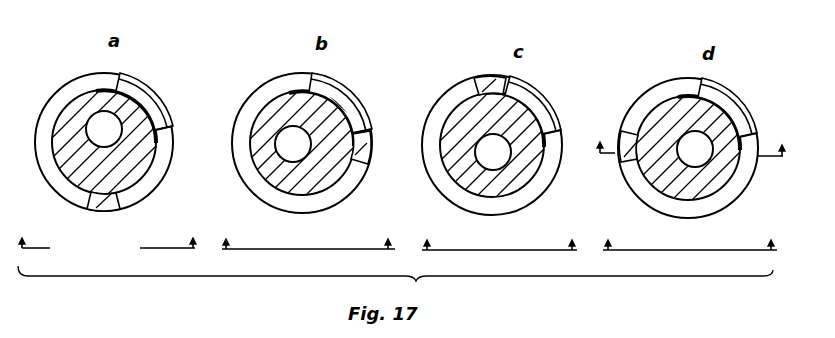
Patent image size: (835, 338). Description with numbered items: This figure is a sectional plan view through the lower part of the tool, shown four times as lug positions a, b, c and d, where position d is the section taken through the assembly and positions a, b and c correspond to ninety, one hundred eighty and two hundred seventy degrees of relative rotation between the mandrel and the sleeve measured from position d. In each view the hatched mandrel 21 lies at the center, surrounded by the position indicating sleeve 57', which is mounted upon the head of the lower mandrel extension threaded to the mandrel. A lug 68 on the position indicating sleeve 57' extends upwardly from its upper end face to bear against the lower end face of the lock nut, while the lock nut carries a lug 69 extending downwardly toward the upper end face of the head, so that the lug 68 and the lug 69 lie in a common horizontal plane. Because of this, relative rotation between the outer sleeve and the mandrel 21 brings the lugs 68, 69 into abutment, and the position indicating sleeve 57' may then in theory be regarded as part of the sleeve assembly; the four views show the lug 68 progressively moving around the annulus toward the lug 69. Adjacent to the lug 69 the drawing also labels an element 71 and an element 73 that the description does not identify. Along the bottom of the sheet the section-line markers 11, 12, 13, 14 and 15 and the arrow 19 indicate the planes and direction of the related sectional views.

The mandrel 21 is at (127, 155).
The position indicating sleeve 57' is at (384, 145).
The lug 68 is at (92, 202).
The lug 69 is at (146, 78).
The tab end 71 is at (172, 133).
The spring arc 73 is at (118, 75).
The section line 11- 11 is at (109, 232).
The section line 12- 12 is at (312, 232).
The section line 13- 13 is at (503, 233).
The section line 14- 14 is at (695, 233).
The section line 15- 15 is at (693, 139).
The section arrow 19 is at (235, 88).